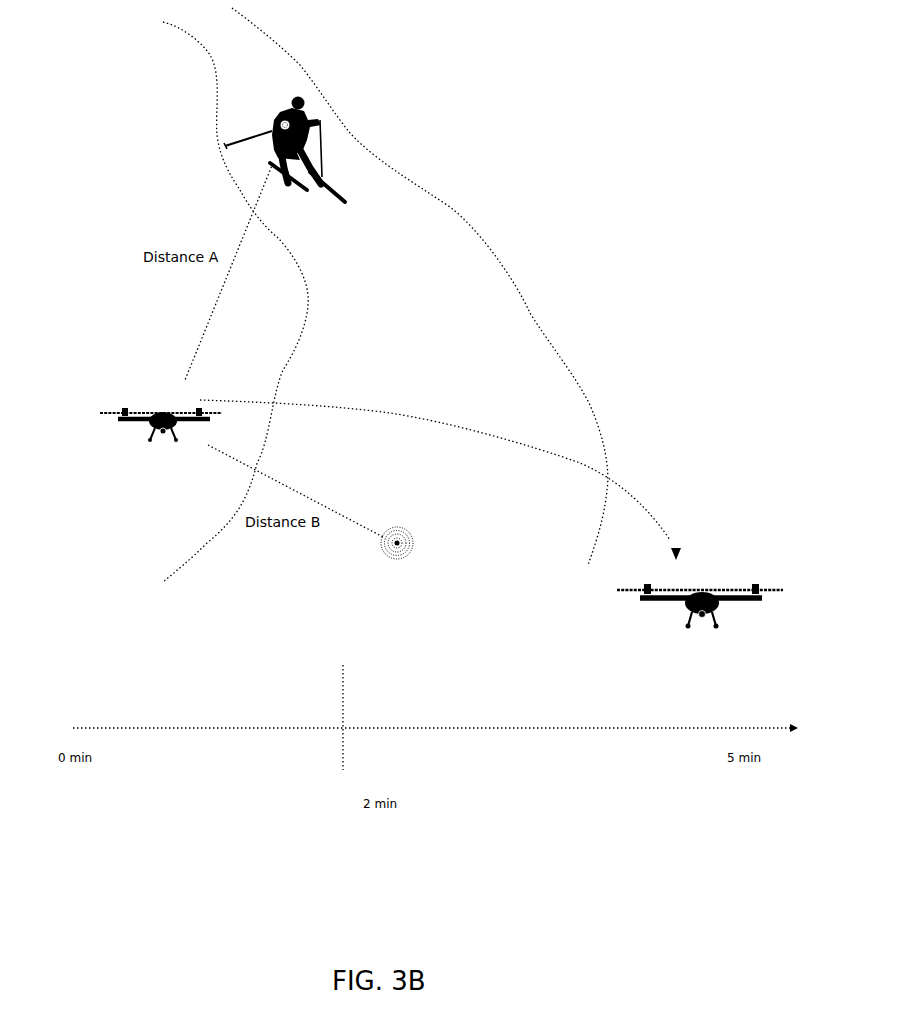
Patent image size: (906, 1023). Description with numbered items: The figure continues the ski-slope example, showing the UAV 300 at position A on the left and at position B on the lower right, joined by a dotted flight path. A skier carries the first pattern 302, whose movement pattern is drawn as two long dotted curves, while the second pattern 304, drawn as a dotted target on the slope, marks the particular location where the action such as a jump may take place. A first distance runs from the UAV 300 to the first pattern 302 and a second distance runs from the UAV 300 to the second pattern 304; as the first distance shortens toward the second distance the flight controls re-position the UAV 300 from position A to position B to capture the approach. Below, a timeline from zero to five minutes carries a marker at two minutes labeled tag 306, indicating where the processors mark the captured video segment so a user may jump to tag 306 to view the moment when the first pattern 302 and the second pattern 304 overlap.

The UAV 300 is at (441, 549).
The first pattern 302 is at (305, 133).
The second pattern 304 is at (413, 555).
The tag 306 is at (352, 767).